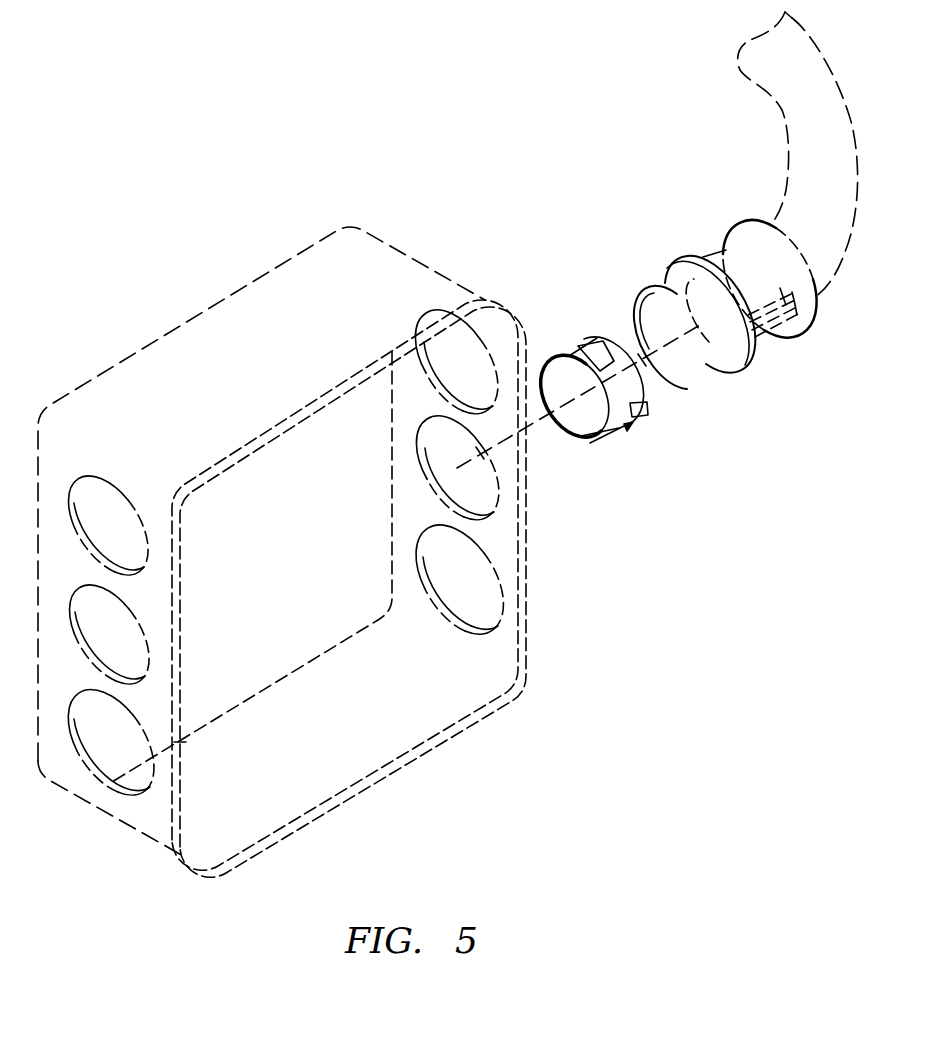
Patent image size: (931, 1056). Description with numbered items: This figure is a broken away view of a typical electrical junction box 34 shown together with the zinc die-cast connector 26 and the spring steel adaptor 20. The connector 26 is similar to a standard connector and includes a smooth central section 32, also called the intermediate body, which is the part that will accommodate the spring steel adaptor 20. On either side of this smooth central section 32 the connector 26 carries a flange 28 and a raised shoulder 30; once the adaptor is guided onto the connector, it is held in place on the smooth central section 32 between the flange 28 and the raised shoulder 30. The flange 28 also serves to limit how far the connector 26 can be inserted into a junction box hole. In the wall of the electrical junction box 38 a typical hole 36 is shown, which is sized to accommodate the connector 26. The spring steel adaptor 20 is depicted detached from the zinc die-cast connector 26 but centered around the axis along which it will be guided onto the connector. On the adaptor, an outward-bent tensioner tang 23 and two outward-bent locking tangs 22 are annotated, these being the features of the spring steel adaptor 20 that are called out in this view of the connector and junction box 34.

The spring steel adaptor 20 is at (545, 338).
The outward-bent locking tangs 22 is at (613, 340).
The outward-bent tensioner tang 23 is at (639, 420).
The zinc die-cast connector 26 is at (768, 356).
The flange 28 is at (747, 370).
The raised shoulder 30 is at (640, 293).
The smooth central section 32 is at (722, 372).
The electrical junction box 34 is at (113, 345).
The hole 36 is at (472, 578).
The wall of the electrical junction box 38 is at (437, 747).